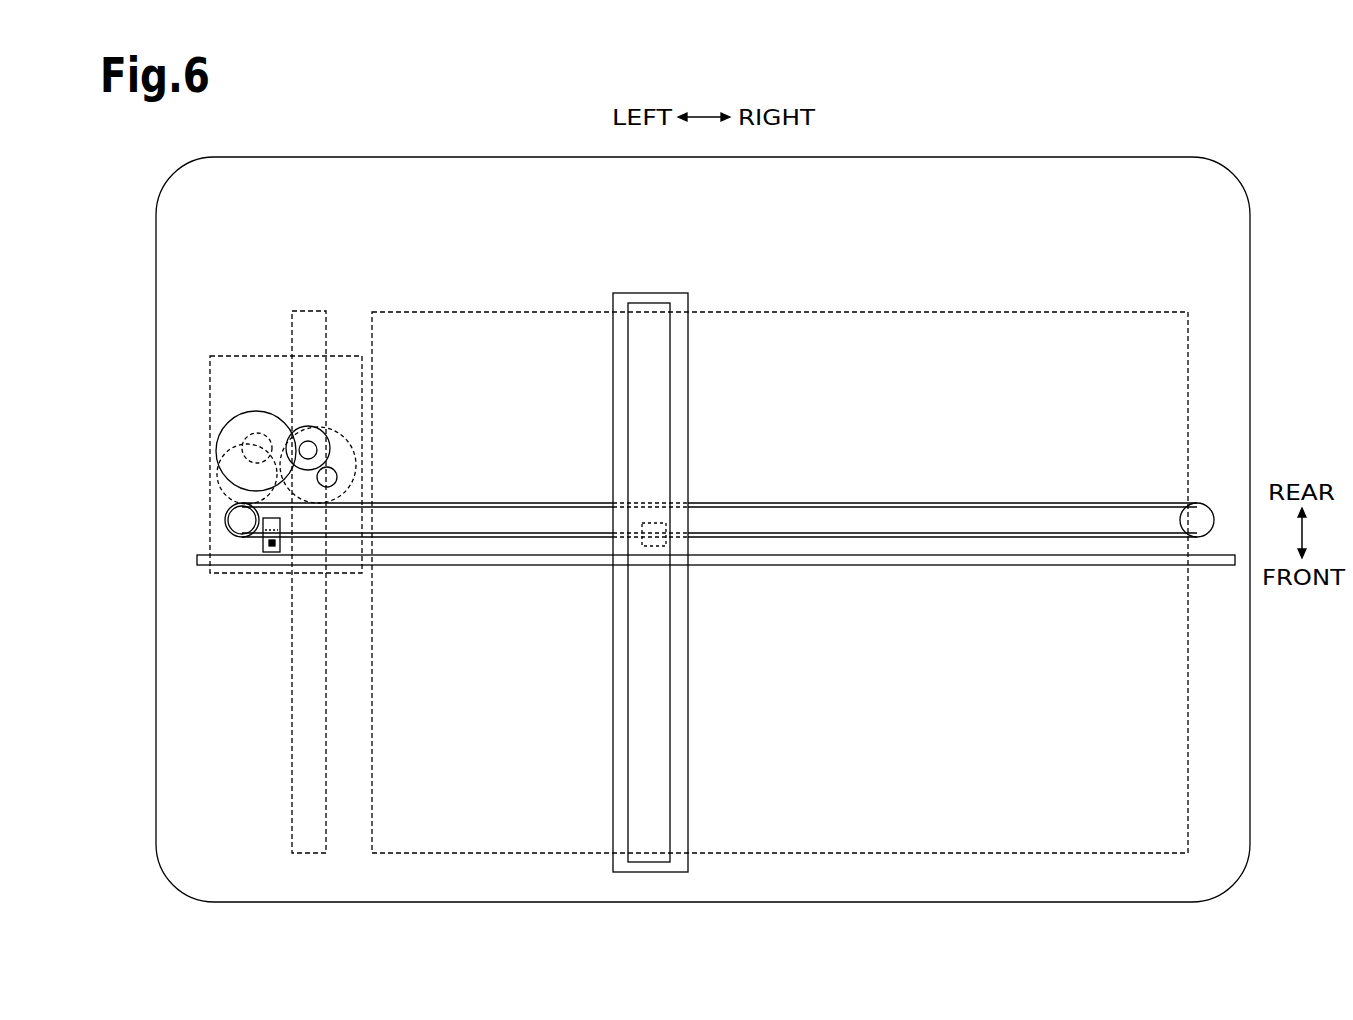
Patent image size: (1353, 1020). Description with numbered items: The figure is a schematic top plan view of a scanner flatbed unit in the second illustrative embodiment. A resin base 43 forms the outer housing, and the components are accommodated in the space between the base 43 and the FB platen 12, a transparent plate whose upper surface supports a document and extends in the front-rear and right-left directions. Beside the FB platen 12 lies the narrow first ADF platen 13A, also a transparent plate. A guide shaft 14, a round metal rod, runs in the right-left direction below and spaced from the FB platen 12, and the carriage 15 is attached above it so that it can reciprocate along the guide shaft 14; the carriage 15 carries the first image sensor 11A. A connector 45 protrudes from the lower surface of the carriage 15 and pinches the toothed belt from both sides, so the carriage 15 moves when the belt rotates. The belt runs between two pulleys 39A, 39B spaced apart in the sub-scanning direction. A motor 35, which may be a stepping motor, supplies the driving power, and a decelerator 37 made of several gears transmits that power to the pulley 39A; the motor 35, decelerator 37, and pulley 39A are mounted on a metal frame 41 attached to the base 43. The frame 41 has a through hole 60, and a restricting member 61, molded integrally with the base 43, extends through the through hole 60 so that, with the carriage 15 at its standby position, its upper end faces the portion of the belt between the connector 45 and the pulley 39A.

The base 43 is at (1120, 165).
The FB platen 12 is at (1013, 322).
The first ADF platen 13A is at (305, 320).
The frame 41 is at (228, 365).
The carriage 15 is at (686, 355).
The first image sensor 11A is at (670, 398).
The connector 45 is at (666, 547).
The pulley 39A is at (230, 520).
The pulley 39B is at (1197, 513).
The guide shaft 14 is at (878, 562).
The decelerator 37 is at (225, 440).
The motor 35 is at (352, 452).
The restricting member 61 is at (265, 548).
The through hole 60 is at (276, 553).